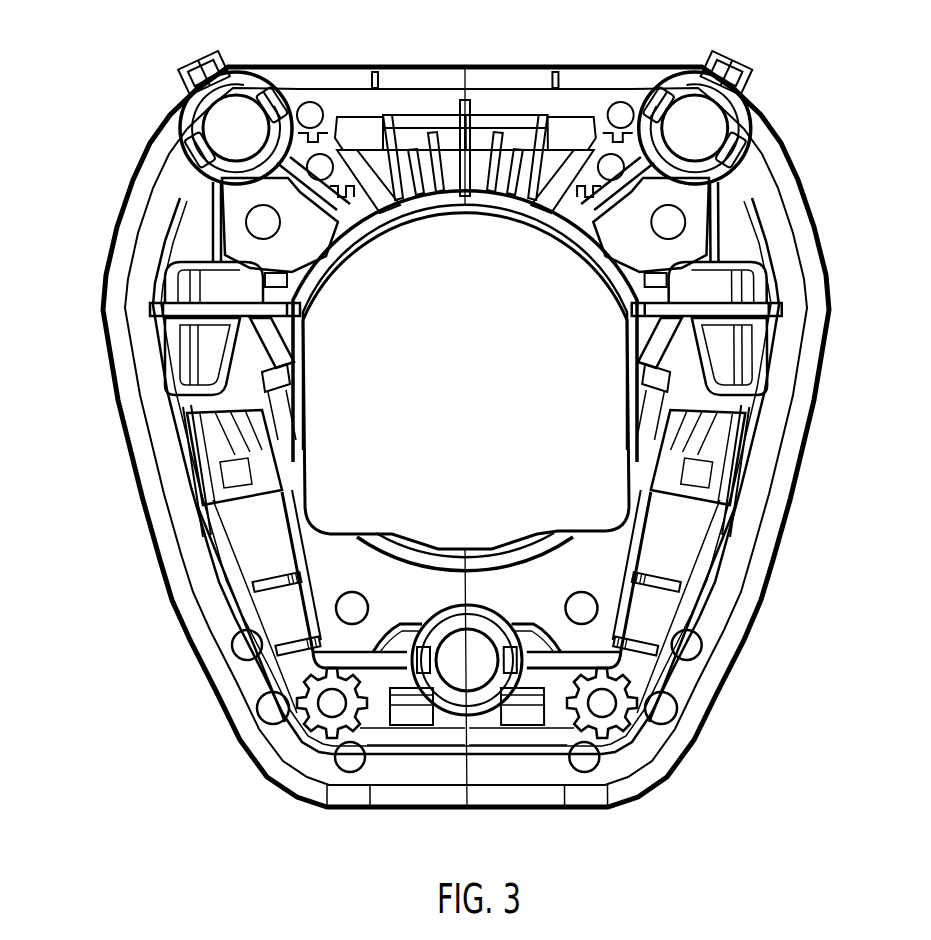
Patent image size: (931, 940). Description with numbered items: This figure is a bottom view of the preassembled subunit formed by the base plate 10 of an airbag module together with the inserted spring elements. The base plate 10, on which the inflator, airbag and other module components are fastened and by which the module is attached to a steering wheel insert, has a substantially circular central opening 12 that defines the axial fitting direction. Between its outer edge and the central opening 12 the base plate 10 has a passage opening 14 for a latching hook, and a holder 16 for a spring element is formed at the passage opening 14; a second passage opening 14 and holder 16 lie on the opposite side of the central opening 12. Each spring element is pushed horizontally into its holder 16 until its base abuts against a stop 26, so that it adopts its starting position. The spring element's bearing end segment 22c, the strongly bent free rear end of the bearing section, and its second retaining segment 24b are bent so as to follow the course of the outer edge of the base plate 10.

The base plate 10 is at (414, 58).
The central opening 12 is at (502, 247).
The passage opening 14 is at (220, 345).
The holder 16 is at (250, 398).
The bearing end segment 22c is at (287, 278).
The second retaining segment 24b is at (200, 357).
The stop 26 is at (257, 520).